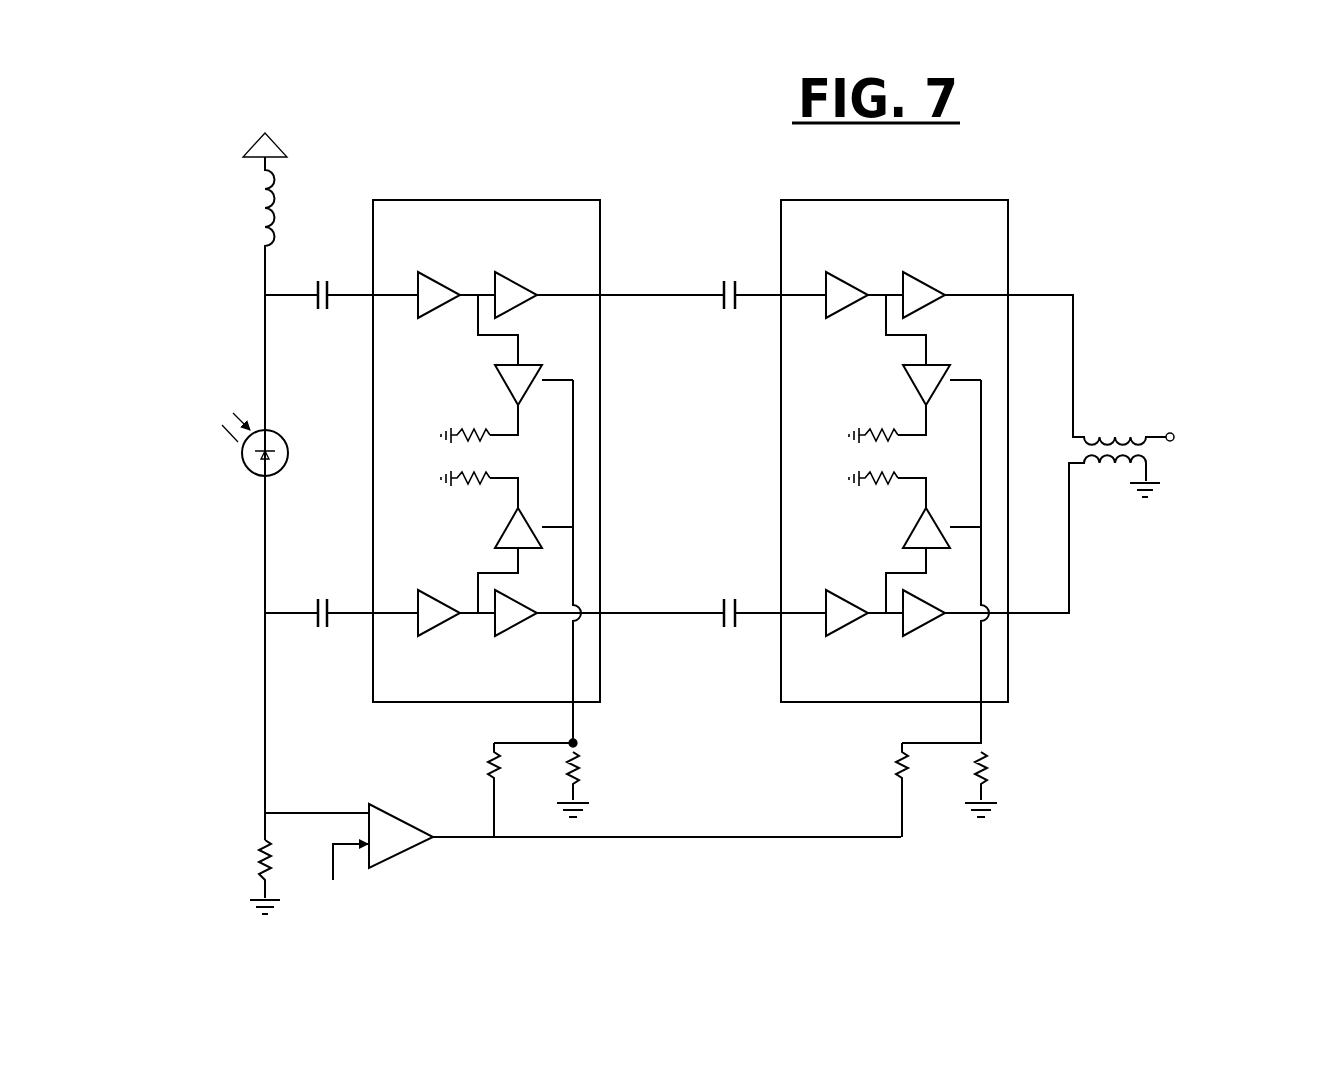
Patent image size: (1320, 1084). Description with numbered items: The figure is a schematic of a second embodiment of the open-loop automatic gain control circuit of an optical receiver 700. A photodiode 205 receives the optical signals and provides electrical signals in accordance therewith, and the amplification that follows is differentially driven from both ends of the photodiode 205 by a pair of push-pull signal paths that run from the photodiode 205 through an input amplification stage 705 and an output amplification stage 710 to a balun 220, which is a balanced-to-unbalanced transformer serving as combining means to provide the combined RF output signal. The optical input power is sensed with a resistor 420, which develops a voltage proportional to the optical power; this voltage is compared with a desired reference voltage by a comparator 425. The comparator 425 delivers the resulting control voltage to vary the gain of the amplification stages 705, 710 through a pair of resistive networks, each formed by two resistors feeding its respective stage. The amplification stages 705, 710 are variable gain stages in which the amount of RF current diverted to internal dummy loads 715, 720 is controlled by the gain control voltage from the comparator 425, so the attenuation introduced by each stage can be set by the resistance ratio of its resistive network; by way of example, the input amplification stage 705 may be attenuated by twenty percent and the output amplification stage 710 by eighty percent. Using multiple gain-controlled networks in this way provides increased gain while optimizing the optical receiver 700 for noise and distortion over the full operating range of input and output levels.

The optical receiver 700 is at (730, 512).
The input amplification stage 705 is at (387, 200).
The output amplification stage 710 is at (924, 489).
The internal dummy load 715 is at (435, 465).
The internal dummy load 720 is at (848, 457).
The photodiode 205 is at (243, 462).
The balun 220 is at (1102, 427).
The resistor 420 is at (248, 847).
The comparator 425 is at (417, 857).